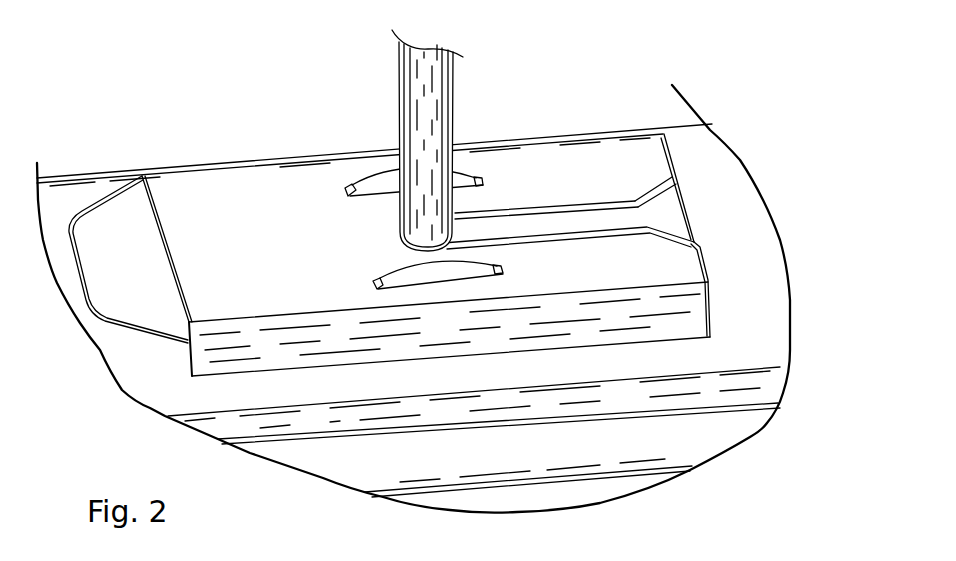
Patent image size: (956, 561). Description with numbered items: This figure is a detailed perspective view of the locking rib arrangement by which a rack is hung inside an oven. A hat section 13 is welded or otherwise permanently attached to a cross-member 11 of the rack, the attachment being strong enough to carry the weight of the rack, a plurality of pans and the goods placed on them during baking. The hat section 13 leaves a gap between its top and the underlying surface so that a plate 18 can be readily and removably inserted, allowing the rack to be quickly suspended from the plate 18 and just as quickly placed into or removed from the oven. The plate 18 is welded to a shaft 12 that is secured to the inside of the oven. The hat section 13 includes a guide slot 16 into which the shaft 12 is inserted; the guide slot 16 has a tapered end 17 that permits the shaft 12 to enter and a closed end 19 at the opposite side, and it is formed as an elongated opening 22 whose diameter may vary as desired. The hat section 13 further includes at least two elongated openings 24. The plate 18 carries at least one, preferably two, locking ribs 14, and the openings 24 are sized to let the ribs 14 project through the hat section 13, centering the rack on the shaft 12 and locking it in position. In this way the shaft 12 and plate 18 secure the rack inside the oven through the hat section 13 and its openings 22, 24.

The cross-member 11 is at (747, 240).
The shaft 12 is at (399, 122).
The hat section 13 is at (678, 270).
The locking rib 14 is at (377, 174).
The guide slot 16 is at (542, 211).
The tapered end 17 is at (668, 179).
The plate 18 is at (108, 243).
The closed end 19 is at (398, 233).
The elongated opening 22 is at (647, 215).
The elongated opening 24 is at (480, 179).